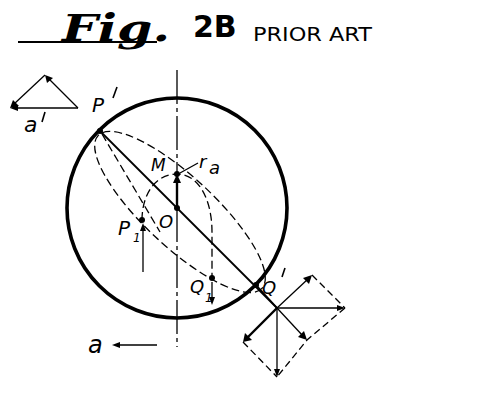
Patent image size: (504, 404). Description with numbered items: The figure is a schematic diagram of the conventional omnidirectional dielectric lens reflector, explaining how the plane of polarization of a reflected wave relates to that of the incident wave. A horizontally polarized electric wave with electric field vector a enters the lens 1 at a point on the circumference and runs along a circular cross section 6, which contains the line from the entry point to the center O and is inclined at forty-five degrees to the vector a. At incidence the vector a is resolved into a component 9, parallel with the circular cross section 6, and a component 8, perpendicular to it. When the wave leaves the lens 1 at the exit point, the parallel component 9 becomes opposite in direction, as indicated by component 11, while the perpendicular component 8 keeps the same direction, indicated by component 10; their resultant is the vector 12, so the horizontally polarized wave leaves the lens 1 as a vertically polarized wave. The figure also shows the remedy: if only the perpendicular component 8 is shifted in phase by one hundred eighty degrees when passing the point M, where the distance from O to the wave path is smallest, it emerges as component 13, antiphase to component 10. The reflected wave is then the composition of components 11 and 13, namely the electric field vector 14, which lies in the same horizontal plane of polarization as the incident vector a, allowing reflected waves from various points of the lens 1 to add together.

The lens 1 is at (248, 123).
The circular cross section 6 is at (190, 212).
The vertical component 8 is at (25, 87).
The parallel component 9 is at (61, 87).
The vertical component direction at exit 10 is at (259, 325).
The reversed parallel component 11 is at (296, 352).
The resultant electric field vector 12 is at (254, 350).
The phase-reversed vertical component 13 is at (286, 294).
The horizontally polarized electric field vector 14 is at (320, 297).